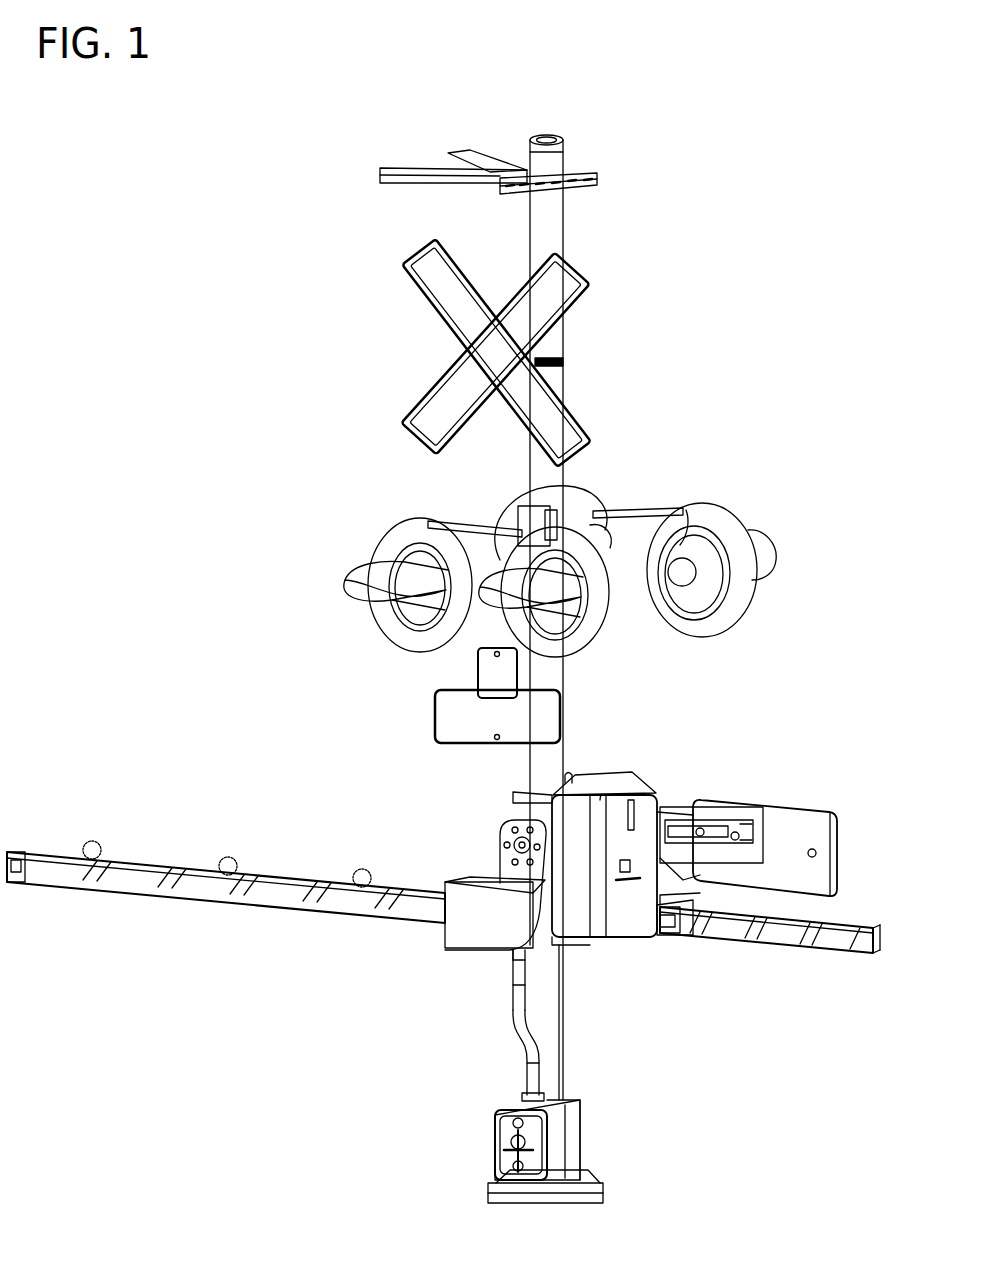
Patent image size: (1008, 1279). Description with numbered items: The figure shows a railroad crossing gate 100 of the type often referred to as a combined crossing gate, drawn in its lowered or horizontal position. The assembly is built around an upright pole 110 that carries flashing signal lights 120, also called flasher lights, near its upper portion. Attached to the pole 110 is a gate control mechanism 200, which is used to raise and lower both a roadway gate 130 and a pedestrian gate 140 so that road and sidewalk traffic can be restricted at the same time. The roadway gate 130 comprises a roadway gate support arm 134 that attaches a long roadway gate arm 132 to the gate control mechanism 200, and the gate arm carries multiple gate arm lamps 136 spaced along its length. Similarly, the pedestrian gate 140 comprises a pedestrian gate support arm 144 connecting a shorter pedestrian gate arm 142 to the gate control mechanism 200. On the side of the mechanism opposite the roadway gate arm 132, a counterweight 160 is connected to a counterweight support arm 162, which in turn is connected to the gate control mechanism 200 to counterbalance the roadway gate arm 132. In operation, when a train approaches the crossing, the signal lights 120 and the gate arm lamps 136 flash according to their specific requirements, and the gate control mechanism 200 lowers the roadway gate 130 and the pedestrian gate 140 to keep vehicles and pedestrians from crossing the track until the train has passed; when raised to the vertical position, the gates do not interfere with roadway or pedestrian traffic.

The railroad crossing gate 100 is at (200, 190).
The pole 110 is at (578, 147).
The signal lights 120 is at (372, 534).
The roadway gate 130 is at (300, 960).
The roadway gate arm 132 is at (150, 886).
The roadway gate support arm 134 is at (482, 937).
The gate arm lamps 136 is at (92, 842).
The pedestrian gate 140 is at (738, 980).
The pedestrian gate arm 142 is at (868, 958).
The pedestrian gate support arm 144 is at (668, 940).
The counterweight 160 is at (843, 863).
The counterweight support arm 162 is at (740, 802).
The gate control mechanism 200 is at (606, 792).